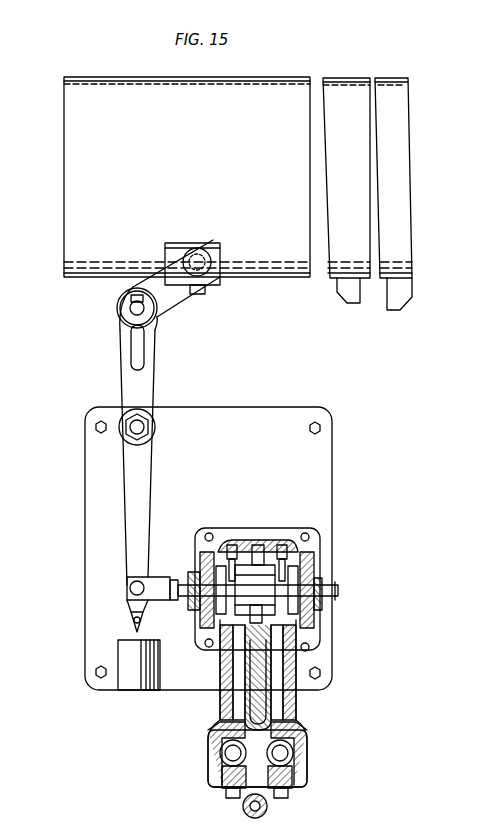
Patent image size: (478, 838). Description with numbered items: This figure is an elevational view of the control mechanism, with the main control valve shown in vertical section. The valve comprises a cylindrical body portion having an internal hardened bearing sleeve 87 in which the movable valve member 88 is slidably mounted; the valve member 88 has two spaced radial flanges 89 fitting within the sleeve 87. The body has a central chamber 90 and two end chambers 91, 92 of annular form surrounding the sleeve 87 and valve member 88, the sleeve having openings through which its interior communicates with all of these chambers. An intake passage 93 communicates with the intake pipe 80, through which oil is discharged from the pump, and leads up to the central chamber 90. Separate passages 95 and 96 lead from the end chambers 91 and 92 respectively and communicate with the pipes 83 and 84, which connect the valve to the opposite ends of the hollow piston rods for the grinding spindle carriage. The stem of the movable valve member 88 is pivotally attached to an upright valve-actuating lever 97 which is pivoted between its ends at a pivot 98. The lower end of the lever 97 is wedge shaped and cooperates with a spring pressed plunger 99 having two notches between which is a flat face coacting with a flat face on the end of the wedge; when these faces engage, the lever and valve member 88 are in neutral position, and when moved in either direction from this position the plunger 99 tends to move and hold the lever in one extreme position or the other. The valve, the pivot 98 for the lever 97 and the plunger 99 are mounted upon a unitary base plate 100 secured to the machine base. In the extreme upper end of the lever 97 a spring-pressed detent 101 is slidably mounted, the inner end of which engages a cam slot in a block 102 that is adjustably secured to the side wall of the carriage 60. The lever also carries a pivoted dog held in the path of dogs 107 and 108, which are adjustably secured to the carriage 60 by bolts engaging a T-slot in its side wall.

The carriage 60 is at (64, 158).
The dog 107 is at (345, 292).
The dog 108 is at (392, 310).
The block 102 is at (172, 243).
The spring-pressed detent 101 is at (199, 258).
The pivot 98 is at (142, 425).
The valve-actuating lever 97 is at (147, 480).
The base plate 100 is at (95, 525).
The spring pressed plunger 99 is at (124, 642).
The bearing sleeve 87 is at (228, 652).
The radial flanges 89 is at (205, 568).
The end chamber 92 is at (232, 545).
The movable valve member 88 is at (250, 545).
The central chamber 90 is at (264, 548).
The end chamber 91 is at (285, 548).
The passage 96 is at (228, 700).
The passage 95 is at (283, 706).
The intake passage 93 is at (262, 680).
The pipe 84 is at (220, 757).
The pipe 83 is at (286, 748).
The pipe 80 is at (266, 813).